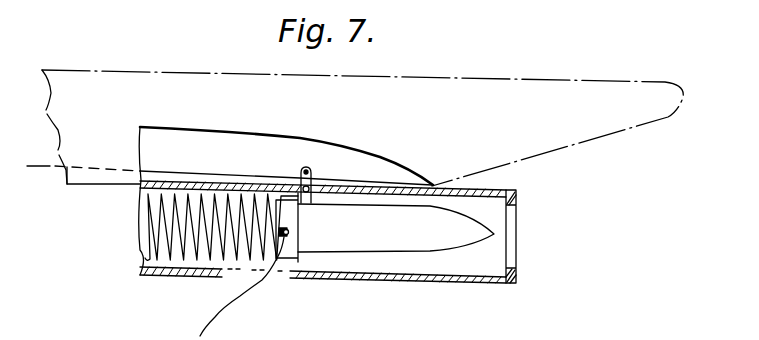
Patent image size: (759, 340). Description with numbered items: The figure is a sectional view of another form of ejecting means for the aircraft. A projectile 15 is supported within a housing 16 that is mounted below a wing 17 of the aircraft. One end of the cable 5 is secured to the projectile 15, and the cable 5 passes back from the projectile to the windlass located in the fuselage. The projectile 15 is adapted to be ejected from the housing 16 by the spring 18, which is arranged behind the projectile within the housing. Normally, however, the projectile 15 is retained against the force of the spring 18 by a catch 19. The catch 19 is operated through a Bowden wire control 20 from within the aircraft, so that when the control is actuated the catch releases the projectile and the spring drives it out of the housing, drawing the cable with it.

The wing 17 is at (404, 85).
The Bowden wire control 20 is at (50, 168).
The spring 18 is at (157, 277).
The housing 16 is at (187, 275).
The projectile 15 is at (396, 228).
The catch 19 is at (313, 176).
The cable 5 is at (244, 295).